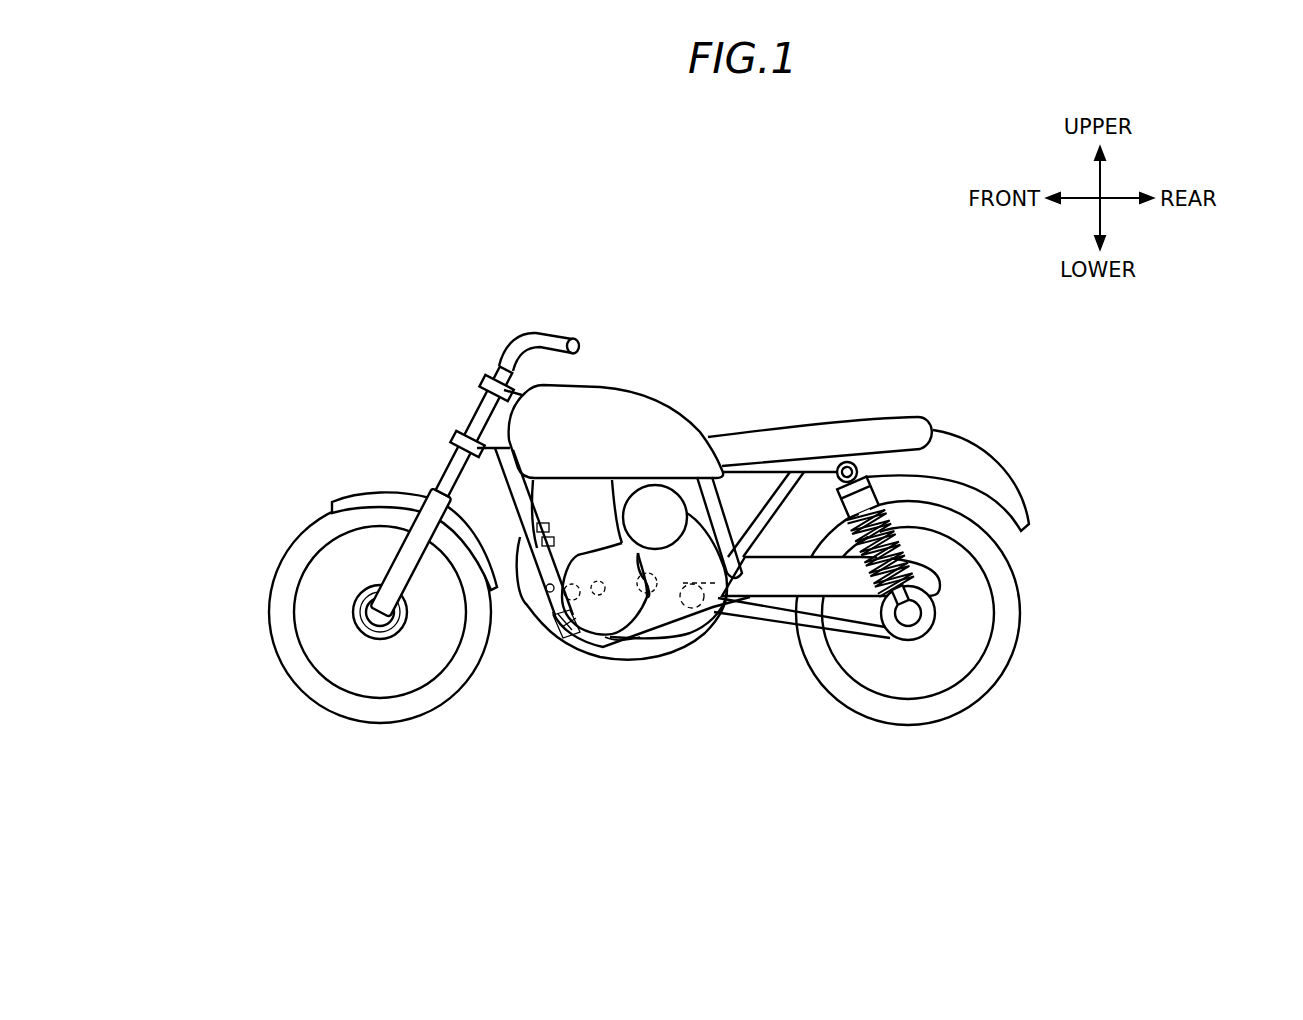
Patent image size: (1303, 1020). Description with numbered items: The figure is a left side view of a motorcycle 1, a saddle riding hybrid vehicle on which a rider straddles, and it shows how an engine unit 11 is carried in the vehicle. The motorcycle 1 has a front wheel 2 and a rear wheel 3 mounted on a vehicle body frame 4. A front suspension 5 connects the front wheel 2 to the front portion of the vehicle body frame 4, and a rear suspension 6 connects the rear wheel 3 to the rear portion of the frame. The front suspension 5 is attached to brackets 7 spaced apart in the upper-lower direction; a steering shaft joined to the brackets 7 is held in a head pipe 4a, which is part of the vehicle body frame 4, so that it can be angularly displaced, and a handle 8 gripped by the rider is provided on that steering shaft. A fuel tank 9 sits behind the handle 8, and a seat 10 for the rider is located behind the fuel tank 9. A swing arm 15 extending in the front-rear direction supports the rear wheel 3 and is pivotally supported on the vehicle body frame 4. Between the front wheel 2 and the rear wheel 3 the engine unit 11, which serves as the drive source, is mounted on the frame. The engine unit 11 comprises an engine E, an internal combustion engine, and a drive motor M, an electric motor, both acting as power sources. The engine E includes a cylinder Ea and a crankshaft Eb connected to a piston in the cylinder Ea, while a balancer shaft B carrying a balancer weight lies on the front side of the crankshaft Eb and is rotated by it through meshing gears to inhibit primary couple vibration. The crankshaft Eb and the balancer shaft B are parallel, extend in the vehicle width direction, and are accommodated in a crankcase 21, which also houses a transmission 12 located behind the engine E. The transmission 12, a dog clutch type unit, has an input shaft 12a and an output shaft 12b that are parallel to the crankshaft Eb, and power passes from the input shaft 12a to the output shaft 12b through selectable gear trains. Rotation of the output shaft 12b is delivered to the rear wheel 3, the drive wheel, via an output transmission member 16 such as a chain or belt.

The motorcycle 1 is at (400, 284).
The front wheel 2 is at (272, 578).
The rear wheel 3 is at (1022, 607).
The vehicle body frame 4 is at (517, 493).
The head pipe 4a is at (496, 388).
The front suspension 5 is at (410, 568).
The rear suspension 6 is at (860, 600).
The brackets 7 is at (467, 444).
The handle 8 is at (572, 334).
The fuel tank 9 is at (637, 402).
The seat 10 is at (750, 430).
The engine unit 11 is at (696, 551).
The drive motor M is at (661, 500).
The engine E is at (562, 527).
The cylinder Ea is at (577, 533).
The crankshaft Eb is at (599, 597).
The balancer shaft B is at (572, 603).
The transmission 12 is at (692, 608).
The input shaft 12a is at (650, 592).
The output shaft 12b is at (698, 610).
The crankcase 21 is at (648, 603).
The swing arm 15 is at (781, 600).
The output transmission member 16 is at (822, 634).